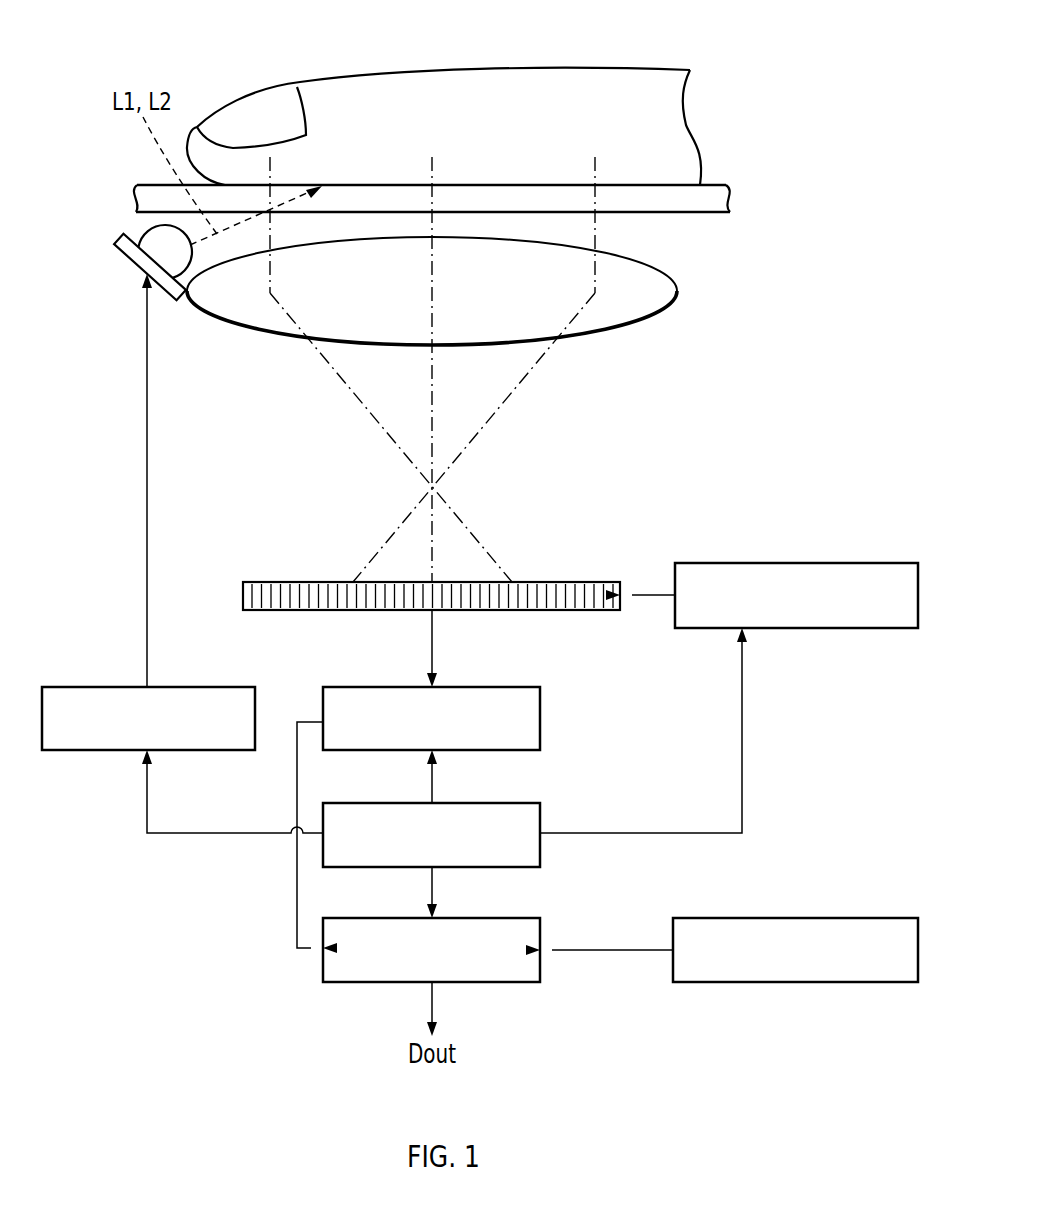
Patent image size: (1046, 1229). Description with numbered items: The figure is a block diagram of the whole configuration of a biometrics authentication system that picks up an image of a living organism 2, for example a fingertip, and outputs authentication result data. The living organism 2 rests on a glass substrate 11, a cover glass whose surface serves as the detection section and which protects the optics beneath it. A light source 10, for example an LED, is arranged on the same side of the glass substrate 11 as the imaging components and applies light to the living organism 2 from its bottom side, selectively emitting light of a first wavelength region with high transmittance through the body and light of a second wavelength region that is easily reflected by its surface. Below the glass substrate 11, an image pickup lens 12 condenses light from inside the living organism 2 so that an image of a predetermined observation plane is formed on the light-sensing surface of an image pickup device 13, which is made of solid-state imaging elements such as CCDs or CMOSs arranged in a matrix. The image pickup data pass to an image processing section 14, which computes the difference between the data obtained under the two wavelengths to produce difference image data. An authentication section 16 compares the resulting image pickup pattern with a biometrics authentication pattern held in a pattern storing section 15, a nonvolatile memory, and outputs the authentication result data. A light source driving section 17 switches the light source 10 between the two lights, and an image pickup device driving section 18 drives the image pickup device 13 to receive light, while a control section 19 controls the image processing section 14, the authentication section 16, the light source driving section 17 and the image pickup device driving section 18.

The living organism 2 is at (627, 41).
The light source 10 is at (180, 297).
The glass substrate 11 is at (733, 199).
The image pickup lens 12 is at (668, 291).
The image pickup device 13 is at (571, 581).
The image processing section 14 is at (445, 686).
The pattern storing section 15 is at (808, 917).
The authentication section 16 is at (445, 917).
The light source driving section 17 is at (160, 686).
The image pickup device driving section 18 is at (810, 562).
The control section 19 is at (445, 802).